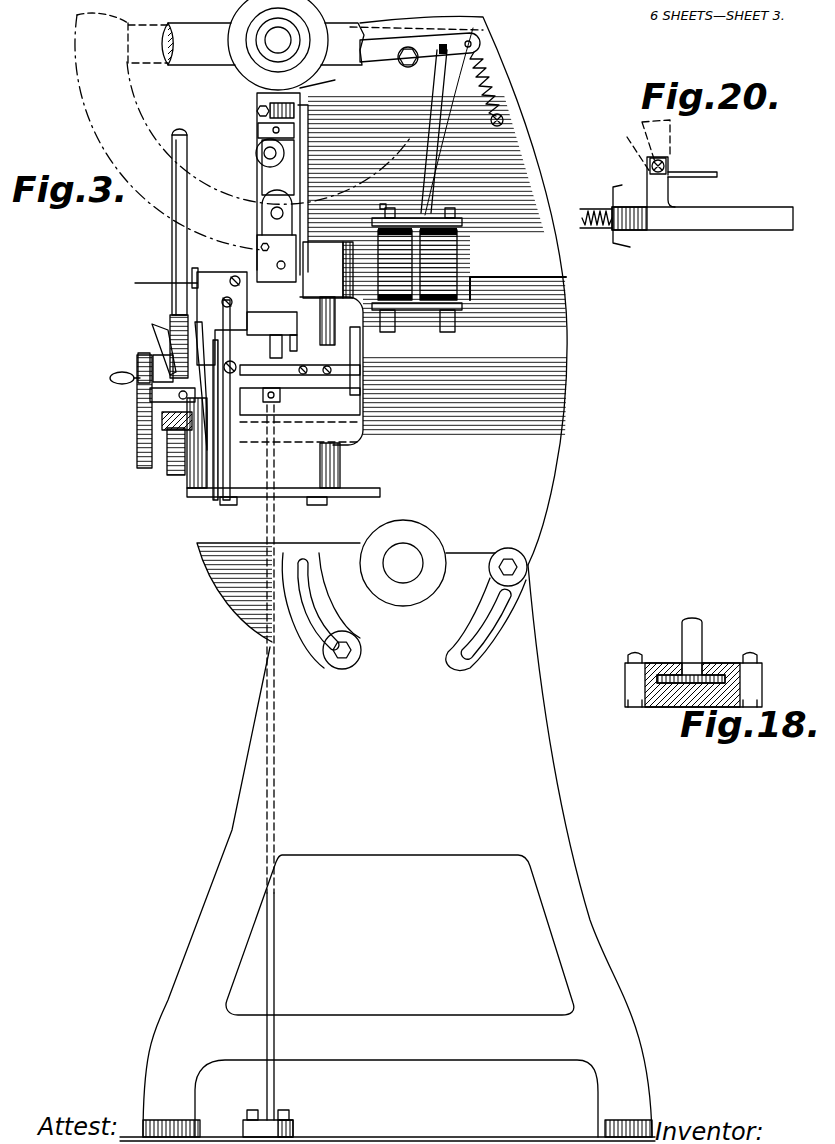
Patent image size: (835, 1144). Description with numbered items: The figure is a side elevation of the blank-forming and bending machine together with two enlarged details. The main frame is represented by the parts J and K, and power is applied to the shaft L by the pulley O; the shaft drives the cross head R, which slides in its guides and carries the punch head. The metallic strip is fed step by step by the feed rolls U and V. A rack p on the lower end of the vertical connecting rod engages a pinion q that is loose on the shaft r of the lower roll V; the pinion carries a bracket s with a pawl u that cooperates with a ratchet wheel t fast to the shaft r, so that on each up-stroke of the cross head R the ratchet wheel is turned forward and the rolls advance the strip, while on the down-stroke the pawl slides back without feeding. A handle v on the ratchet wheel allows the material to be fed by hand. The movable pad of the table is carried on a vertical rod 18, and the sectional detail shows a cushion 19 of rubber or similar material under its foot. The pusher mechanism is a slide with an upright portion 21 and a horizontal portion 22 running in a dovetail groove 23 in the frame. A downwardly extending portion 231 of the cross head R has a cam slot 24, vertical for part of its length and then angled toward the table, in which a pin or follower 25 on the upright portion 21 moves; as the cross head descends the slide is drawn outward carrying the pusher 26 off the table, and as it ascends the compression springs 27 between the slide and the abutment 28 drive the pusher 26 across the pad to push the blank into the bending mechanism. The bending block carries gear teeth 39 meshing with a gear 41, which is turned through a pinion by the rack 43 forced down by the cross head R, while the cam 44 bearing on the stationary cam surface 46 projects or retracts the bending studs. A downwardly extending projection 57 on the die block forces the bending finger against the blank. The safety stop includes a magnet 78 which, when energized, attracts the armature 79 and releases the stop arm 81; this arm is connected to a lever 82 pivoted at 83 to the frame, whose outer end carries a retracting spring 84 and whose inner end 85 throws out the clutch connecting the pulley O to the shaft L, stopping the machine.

In FIG. 3, the main frame K is at (540, 343).
In FIG. 3, the main frame J is at (387, 830).
In FIG. 3, the shaft L is at (278, 40).
In FIG. 3, the pulley O is at (279, 131).
In FIG. 3, the cross head R is at (262, 225).
In FIG. 3, the vertical rod 18 is at (274, 925).
In FIG. 18, the vertical rod 18 is at (702, 633).
In FIG. 18, the cushion 19 is at (665, 705).
In FIG. 3, the upright portion 21 is at (230, 382).
In FIG. 20, the upright portion 21 is at (658, 192).
In FIG. 3, the horizontal portion 22 is at (300, 427).
In FIG. 20, the horizontal portion 22 is at (692, 222).
In FIG. 3, the dovetail groove 23 is at (470, 465).
In FIG. 3, the cam slot 24 is at (172, 318).
In FIG. 20, the cam slot 24 is at (630, 146).
In FIG. 3, the pin or follower 25 is at (231, 360).
In FIG. 20, the pin or follower 25 is at (668, 162).
In FIG. 3, the pusher 26 is at (290, 417).
In FIG. 20, the pusher 26 is at (717, 172).
In FIG. 3, the compression springs 27 is at (173, 480).
In FIG. 20, the compression springs 27 is at (613, 245).
In FIG. 3, the abutment 28 is at (142, 428).
In FIG. 20, the abutment 28 is at (595, 207).
In FIG. 3, the gear teeth 39 is at (300, 385).
In FIG. 3, the gear 41 is at (340, 362).
In FIG. 3, the rack 43 is at (335, 330).
In FIG. 3, the cam 44 is at (345, 366).
In FIG. 3, the stationary cam surface 46 is at (417, 374).
In FIG. 3, the downwardly extending projection 57 is at (328, 271).
In FIG. 3, the magnet 78 is at (457, 260).
In FIG. 3, the armature 79 is at (462, 222).
In FIG. 3, the arm or stop 81 is at (423, 157).
In FIG. 3, the lever 82 is at (377, 60).
In FIG. 3, the pivot 83 is at (408, 66).
In FIG. 3, the retracting spring 84 is at (482, 81).
In FIG. 3, the inner end of lever 85 is at (335, 80).
In FIG. 3, the downwardly extending portion 231 is at (227, 292).
In FIG. 3, the rack p is at (214, 500).
In FIG. 3, the pinion q is at (155, 326).
In FIG. 3, the shaft r is at (157, 413).
In FIG. 3, the bracket s is at (158, 356).
In FIG. 3, the ratchet wheel t is at (145, 447).
In FIG. 3, the pawl u is at (140, 378).
In FIG. 3, the handle v is at (114, 376).
In FIG. 3, the feed roll U is at (187, 488).
In FIG. 3, the feed roll V is at (197, 490).